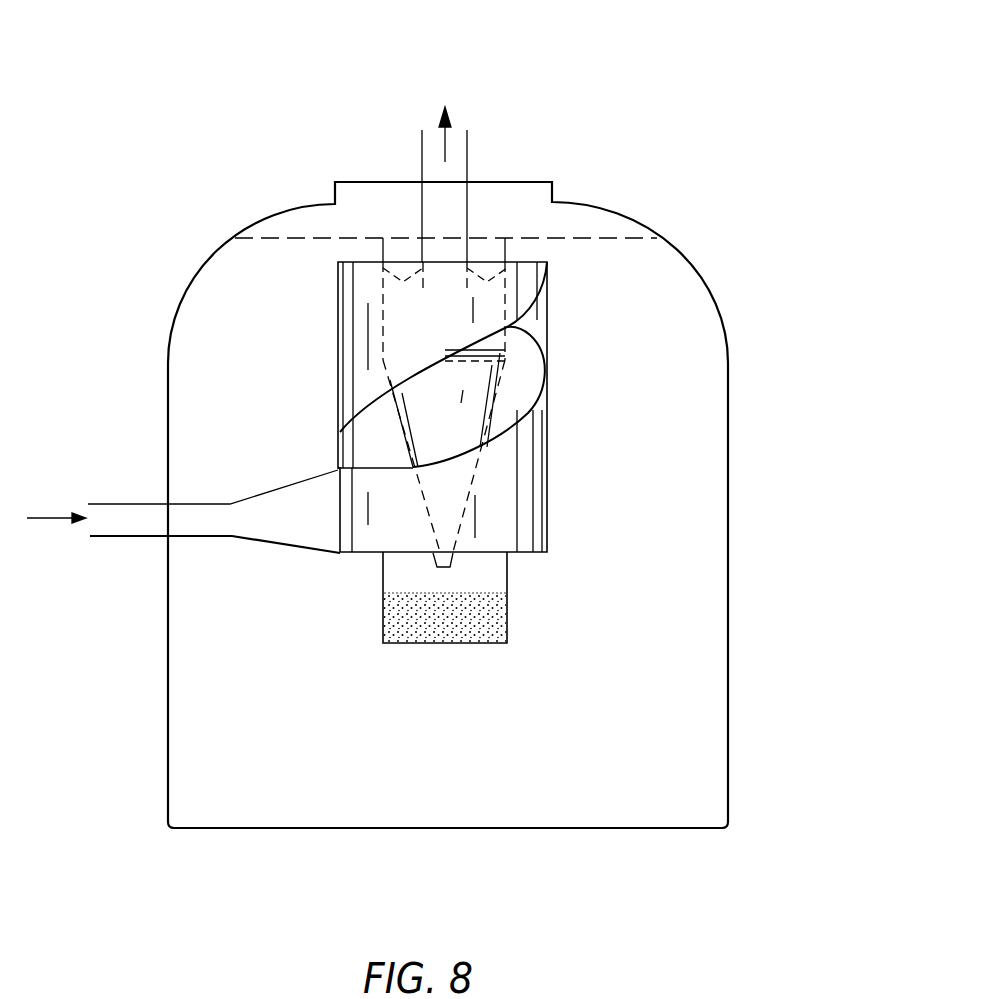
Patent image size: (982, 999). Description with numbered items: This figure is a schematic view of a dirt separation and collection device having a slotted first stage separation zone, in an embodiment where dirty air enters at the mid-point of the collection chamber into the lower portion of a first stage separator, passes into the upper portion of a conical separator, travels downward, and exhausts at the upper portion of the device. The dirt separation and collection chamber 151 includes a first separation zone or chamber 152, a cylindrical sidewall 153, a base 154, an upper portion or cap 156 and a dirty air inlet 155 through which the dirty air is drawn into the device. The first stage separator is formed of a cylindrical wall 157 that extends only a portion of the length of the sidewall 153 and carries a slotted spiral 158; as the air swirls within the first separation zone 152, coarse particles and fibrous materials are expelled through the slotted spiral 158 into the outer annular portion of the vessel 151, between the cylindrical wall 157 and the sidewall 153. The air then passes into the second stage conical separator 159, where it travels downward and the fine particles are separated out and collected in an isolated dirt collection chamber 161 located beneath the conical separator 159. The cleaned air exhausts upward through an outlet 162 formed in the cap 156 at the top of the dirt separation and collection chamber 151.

The dirt separation and collection chamber 151 is at (504, 510).
The first separation zone 152 is at (422, 402).
The cylindrical sidewall 153 is at (730, 677).
The base 154 is at (453, 830).
The dirty air inlet 155 is at (100, 512).
The cap 156 is at (612, 204).
The cylindrical wall 157 is at (513, 516).
The slotted spiral 158 is at (525, 365).
The second stage conical separator 159 is at (493, 412).
The dirt collection chamber 161 is at (480, 575).
The outlet 162 is at (445, 173).